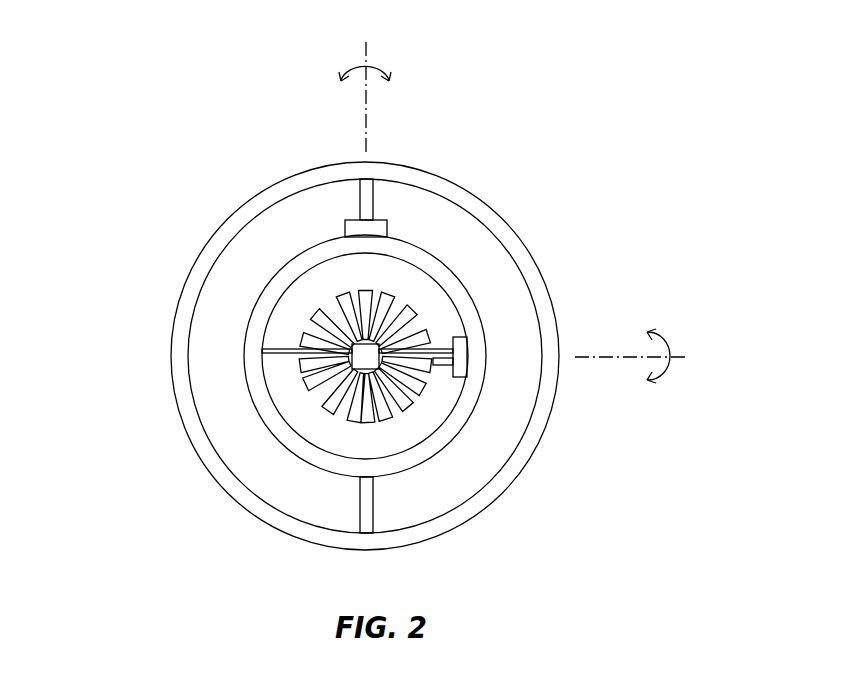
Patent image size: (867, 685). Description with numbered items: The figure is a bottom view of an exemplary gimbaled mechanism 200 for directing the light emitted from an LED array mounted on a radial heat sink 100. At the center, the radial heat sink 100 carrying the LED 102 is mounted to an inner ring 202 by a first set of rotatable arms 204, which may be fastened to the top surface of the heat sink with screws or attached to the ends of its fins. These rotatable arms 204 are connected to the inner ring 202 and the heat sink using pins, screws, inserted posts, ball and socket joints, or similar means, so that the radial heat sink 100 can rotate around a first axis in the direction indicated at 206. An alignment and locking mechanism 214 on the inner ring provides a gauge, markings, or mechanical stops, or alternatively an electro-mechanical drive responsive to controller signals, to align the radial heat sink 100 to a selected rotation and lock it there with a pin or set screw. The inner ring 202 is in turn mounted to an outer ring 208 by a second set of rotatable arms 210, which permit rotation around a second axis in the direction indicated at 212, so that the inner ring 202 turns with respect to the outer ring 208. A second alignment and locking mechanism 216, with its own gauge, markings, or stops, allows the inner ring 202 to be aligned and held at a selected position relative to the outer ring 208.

The radial heat sink 100 is at (330, 415).
The LED 102 is at (367, 352).
The gimbaled mechanism 200 is at (141, 161).
The inner ring 202 is at (268, 280).
The first set of rotatable arms 204 is at (280, 388).
The first axis of rotation 206 is at (671, 345).
The outer ring 208 is at (178, 302).
The second set of rotatable arms 210 is at (363, 204).
The second axis of rotation 212 is at (392, 60).
The alignment and locking mechanism 214 is at (459, 340).
The alignment and locking mechanism 216 is at (388, 228).